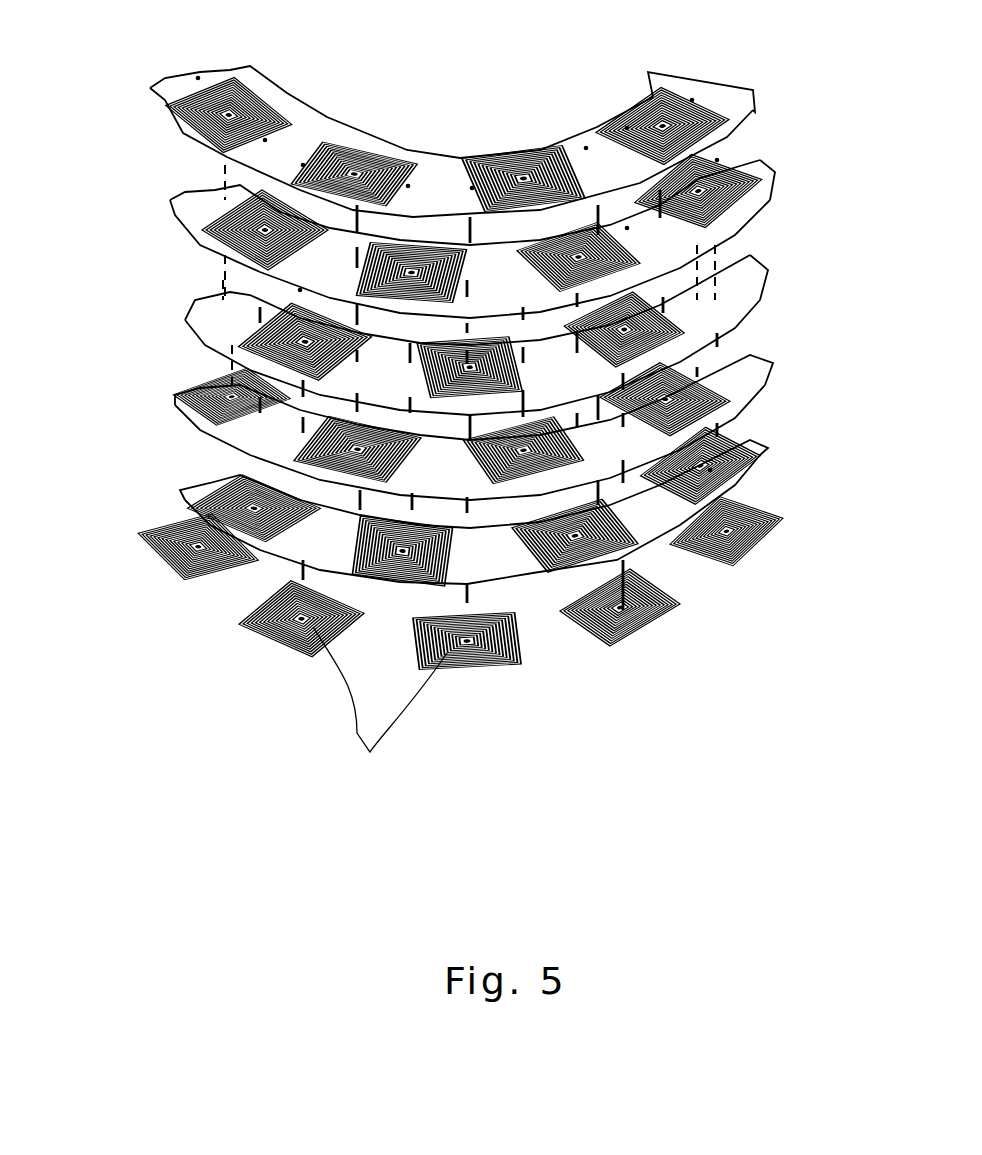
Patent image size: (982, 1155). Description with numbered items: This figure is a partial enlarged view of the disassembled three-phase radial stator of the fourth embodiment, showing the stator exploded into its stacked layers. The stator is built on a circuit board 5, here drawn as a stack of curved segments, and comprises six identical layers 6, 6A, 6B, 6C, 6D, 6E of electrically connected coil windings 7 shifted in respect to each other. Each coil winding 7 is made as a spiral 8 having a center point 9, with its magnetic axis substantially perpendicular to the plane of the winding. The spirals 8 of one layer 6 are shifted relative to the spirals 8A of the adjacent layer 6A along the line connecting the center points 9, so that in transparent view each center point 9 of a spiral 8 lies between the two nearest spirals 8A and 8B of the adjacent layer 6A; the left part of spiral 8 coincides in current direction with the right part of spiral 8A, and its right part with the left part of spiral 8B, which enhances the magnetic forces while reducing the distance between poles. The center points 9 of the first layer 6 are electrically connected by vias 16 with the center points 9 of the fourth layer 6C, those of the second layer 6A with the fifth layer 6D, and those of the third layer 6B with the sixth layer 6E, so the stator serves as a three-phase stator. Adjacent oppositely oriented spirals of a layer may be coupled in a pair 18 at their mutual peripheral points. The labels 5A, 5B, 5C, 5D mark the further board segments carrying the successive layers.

The circuit board 5 is at (160, 88).
The second carrier band segment 5A is at (178, 205).
The third carrier band segment 5B is at (197, 320).
The fourth carrier band segment 5C is at (730, 400).
The fifth carrier band segment 5D is at (185, 490).
The first layer 6 is at (700, 85).
The second layer 6A is at (760, 187).
The third layer 6B is at (740, 313).
The fourth layer 6C is at (737, 398).
The fifth layer 6D is at (760, 453).
The sixth layer 6E is at (763, 517).
The coil winding 7 is at (520, 667).
The spiral 8 is at (503, 150).
The spiral of adjacent layer 8A is at (410, 275).
The spiral of adjacent layer 8B is at (613, 243).
The center point 9 is at (352, 170).
The via 16 is at (190, 558).
The pair 18 is at (380, 711).